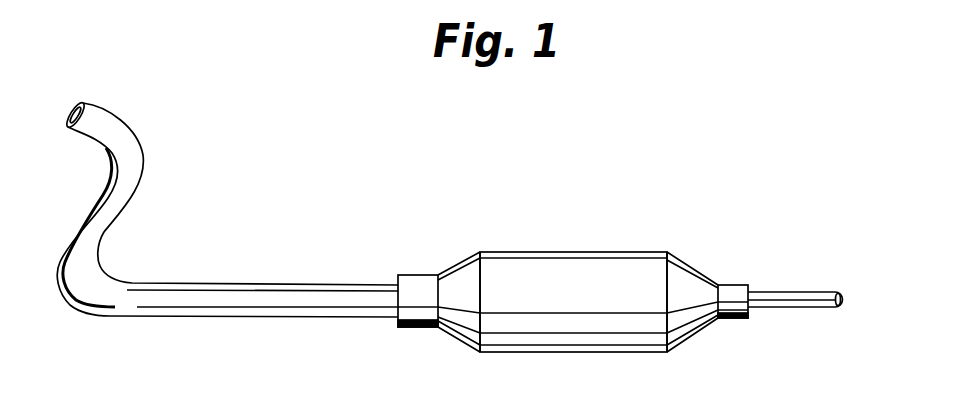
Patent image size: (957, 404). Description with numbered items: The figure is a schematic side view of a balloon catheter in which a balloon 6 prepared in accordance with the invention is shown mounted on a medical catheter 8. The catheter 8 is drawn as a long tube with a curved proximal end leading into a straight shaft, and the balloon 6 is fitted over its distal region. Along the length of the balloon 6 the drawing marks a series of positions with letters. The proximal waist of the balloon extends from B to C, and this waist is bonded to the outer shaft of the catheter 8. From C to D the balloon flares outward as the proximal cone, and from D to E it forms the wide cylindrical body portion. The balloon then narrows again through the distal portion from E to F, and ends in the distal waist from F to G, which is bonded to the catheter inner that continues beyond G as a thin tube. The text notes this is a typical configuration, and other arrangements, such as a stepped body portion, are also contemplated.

The balloon 6 is at (578, 270).
The medical catheter 8 is at (287, 318).
The proximal waist start point B is at (398, 273).
The proximal waist to proximal cone transition C is at (438, 274).
The proximal cone to body portion transition D is at (480, 250).
The body portion to distal portion transition E is at (667, 250).
The distal portion to distal waist transition F is at (719, 283).
The distal waist end point G is at (748, 283).